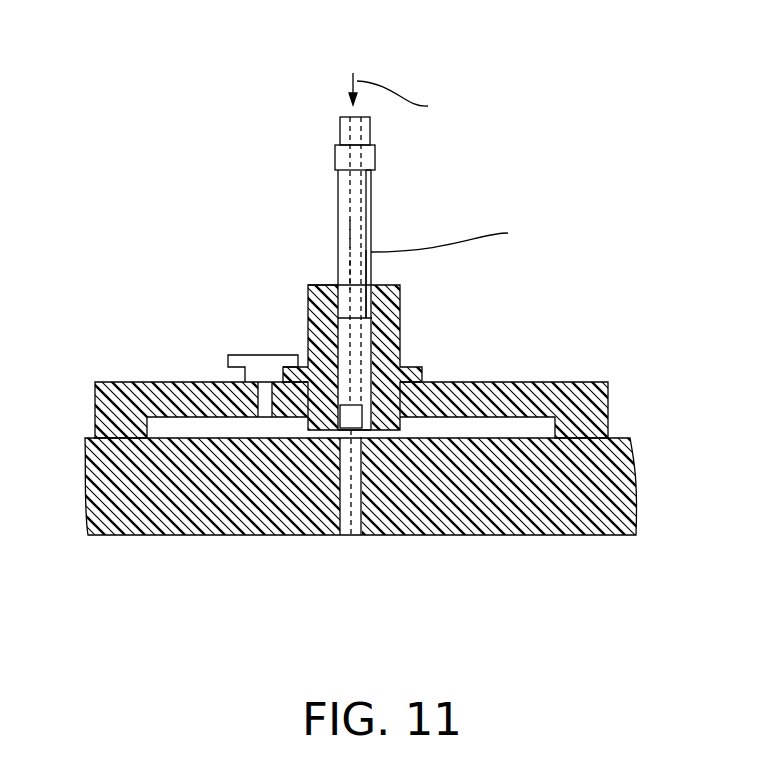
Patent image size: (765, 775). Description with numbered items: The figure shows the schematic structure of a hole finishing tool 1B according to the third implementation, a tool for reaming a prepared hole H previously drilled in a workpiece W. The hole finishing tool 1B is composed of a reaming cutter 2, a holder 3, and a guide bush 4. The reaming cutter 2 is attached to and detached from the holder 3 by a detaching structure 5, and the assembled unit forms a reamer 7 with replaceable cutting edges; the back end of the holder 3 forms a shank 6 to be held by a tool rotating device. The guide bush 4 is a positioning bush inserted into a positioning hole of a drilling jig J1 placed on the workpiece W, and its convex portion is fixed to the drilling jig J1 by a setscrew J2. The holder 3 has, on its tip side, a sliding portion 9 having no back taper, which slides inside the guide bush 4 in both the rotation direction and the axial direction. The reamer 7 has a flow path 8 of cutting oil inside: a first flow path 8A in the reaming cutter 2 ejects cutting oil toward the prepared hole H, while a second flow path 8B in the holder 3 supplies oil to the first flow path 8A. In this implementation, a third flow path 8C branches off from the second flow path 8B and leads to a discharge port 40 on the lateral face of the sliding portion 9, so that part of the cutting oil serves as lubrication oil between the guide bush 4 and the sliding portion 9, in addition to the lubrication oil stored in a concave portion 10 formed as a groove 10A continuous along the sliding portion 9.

The hole finishing tool 1B is at (128, 174).
The reaming cutter 2 is at (361, 535).
The holder 3 is at (338, 224).
The guide bush 4 is at (401, 334).
The detaching structure 5 is at (338, 265).
The shank 6 is at (340, 136).
The reamer 7 is at (330, 192).
The flow path 8 is at (376, 153).
The first flow path 8A is at (345, 540).
The second flow path 8B is at (338, 235).
The third flow path 8C is at (340, 278).
The sliding portion 9 is at (371, 272).
The concave portion 10 is at (371, 225).
The groove 10A is at (371, 193).
The discharge port 40 is at (338, 285).
The drilling jig J1 is at (556, 382).
The setscrew J2 is at (238, 354).
The workpiece W is at (493, 536).
The prepared hole H is at (351, 535).